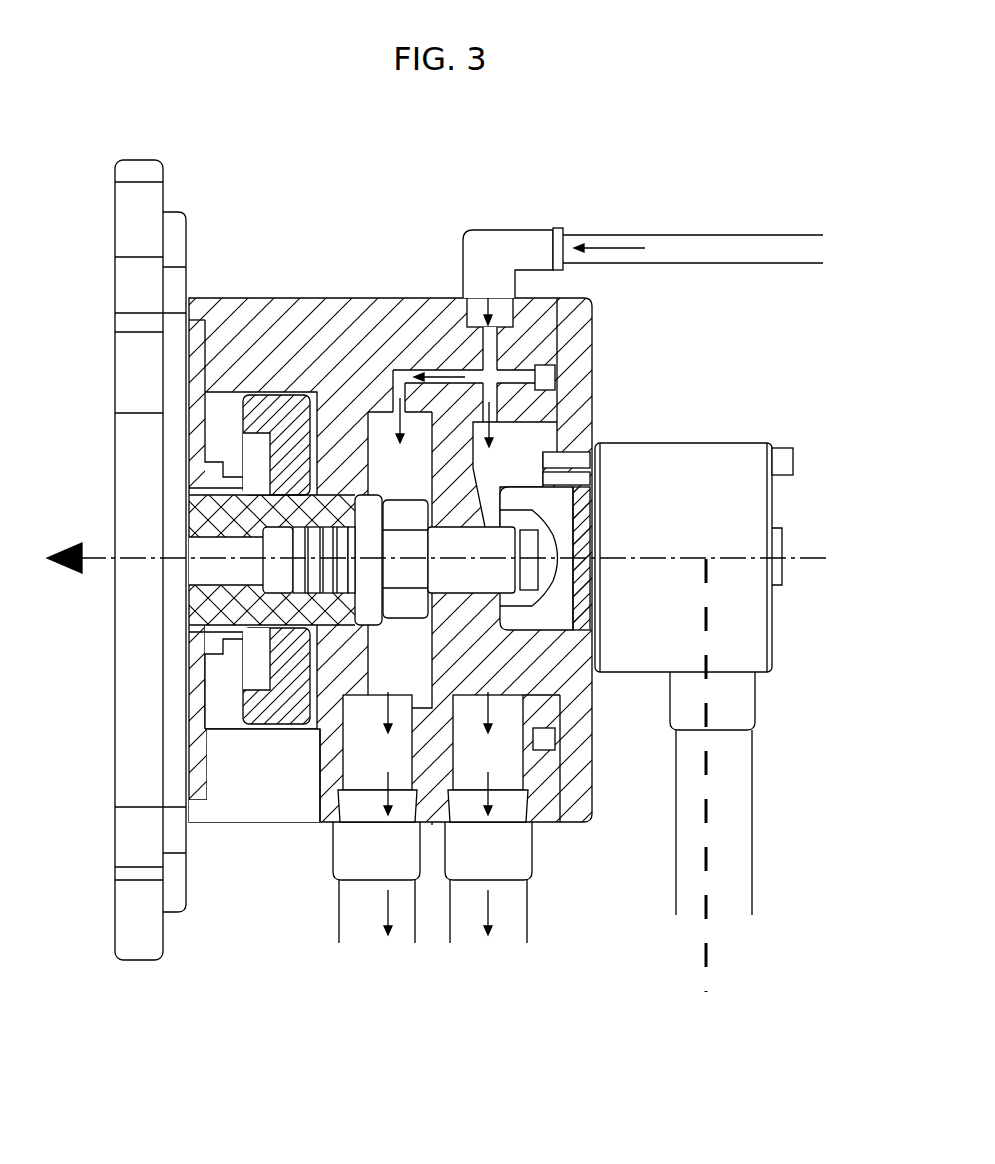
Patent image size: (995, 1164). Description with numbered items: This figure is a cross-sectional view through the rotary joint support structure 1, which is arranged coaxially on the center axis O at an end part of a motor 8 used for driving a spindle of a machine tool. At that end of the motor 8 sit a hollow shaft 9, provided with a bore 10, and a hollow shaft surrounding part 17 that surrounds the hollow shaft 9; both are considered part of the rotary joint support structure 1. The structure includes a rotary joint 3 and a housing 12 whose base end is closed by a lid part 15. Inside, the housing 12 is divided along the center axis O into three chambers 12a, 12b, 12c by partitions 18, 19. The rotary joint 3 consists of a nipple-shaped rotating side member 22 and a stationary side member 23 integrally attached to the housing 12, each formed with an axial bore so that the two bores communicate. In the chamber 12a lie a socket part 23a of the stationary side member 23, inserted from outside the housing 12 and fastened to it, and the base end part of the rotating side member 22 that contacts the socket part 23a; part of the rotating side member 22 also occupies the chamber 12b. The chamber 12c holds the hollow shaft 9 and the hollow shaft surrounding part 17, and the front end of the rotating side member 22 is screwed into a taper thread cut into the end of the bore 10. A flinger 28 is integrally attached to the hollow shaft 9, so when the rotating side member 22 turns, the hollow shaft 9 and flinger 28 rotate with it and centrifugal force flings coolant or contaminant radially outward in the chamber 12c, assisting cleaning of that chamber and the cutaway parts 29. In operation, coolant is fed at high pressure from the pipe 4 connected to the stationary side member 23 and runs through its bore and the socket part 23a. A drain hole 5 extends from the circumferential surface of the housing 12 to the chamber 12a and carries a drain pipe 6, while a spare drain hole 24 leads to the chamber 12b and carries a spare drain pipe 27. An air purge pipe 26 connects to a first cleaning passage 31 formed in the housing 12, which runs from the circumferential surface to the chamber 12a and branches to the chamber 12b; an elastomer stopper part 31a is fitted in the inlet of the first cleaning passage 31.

The rotary joint support structure 1 is at (748, 212).
The rotary joint 3 is at (800, 632).
The pipe 4 is at (730, 853).
The drain hole 5 is at (512, 765).
The drain pipe 6 is at (508, 912).
The motor 8 is at (162, 975).
The hollow shaft 9 is at (195, 617).
The bore 10 is at (197, 547).
The housing 12 is at (320, 327).
The chamber 12a is at (512, 440).
The chamber 12b is at (380, 437).
The chamber 12c is at (228, 410).
The lid part 15 is at (577, 365).
The hollow shaft surrounding part 17 is at (195, 440).
The partition 18 is at (437, 800).
The partition 19 is at (328, 788).
The rotating side member 22 is at (470, 577).
The stationary side member 23 is at (752, 487).
The socket part 23a is at (575, 500).
The spare drain hole 24 is at (360, 730).
The air purge pipe 26 is at (515, 245).
The spare drain pipe 27 is at (362, 912).
The flinger 28 is at (263, 407).
The cutaway parts 29 is at (236, 797).
The first cleaning passage 31 is at (490, 347).
The stopper part 31a is at (465, 307).
The center axis O is at (815, 552).